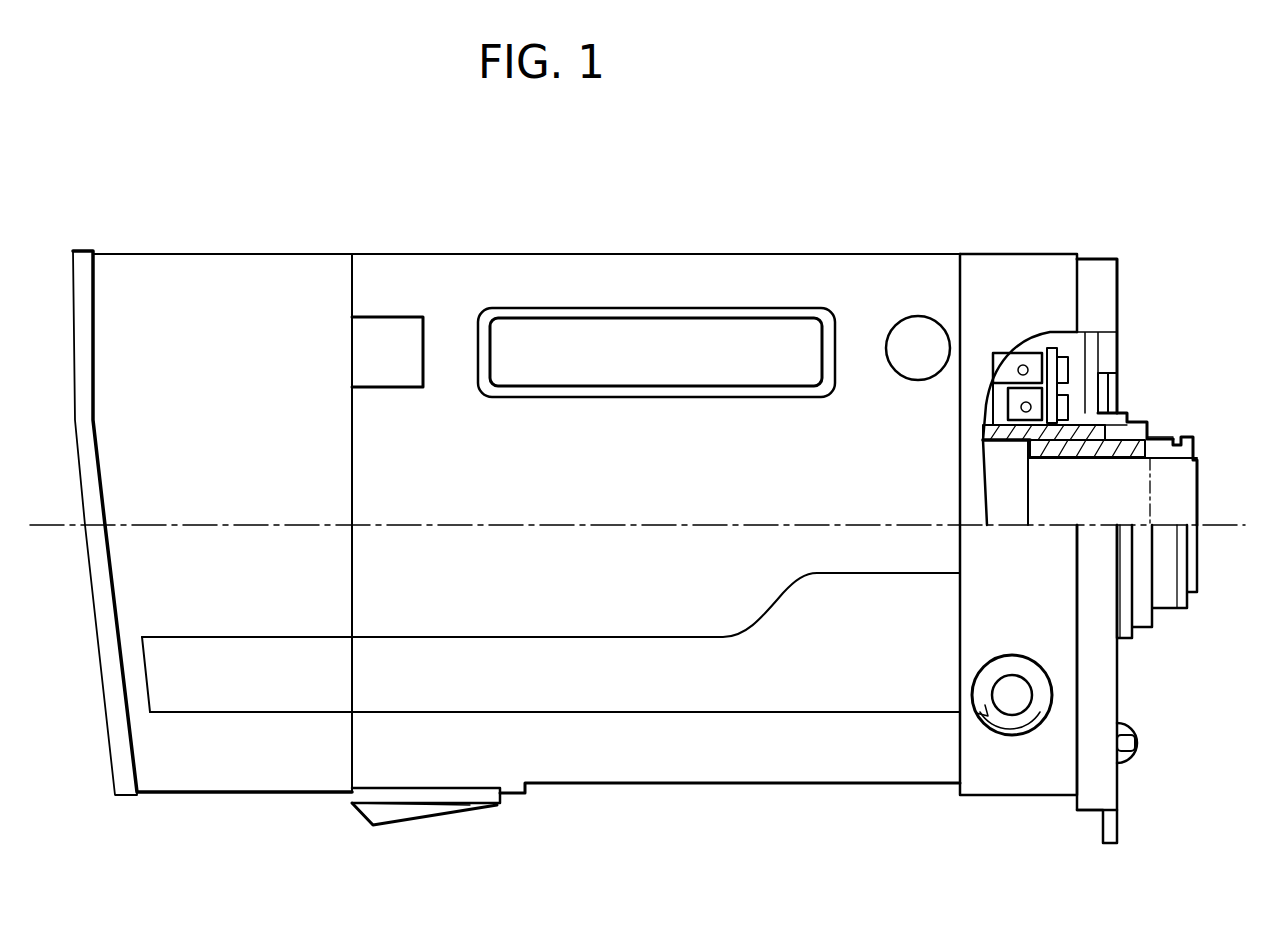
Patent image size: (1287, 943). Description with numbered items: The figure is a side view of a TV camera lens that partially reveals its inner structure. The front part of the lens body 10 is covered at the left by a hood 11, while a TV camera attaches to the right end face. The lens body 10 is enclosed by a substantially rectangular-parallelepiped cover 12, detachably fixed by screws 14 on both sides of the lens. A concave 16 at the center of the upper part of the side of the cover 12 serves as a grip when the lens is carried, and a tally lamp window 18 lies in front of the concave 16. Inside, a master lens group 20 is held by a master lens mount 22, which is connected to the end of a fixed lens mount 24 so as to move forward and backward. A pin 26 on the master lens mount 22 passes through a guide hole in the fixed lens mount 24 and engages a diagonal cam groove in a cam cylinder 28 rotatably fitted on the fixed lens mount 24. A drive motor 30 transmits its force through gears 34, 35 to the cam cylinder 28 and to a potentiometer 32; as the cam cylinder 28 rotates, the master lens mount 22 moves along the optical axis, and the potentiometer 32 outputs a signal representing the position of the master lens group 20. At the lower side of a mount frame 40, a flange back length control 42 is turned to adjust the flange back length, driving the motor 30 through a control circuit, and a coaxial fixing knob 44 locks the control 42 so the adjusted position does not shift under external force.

The lens body 10 is at (800, 172).
The hood 11 is at (190, 275).
The cover 12 is at (578, 268).
The screws 14 is at (912, 333).
The concave 16 is at (697, 338).
The tally lamp window 18 is at (398, 330).
The master lens group 20 is at (1138, 505).
The master lens mount 22 is at (1152, 430).
The fixed lens mount 24 is at (1000, 452).
The pin 26 is at (1112, 404).
The cam cylinder 28 is at (1135, 424).
The drive motor 30 is at (1023, 363).
The potentiometer 32 is at (1060, 402).
The gear 34 is at (1050, 368).
The gear 35 is at (1008, 408).
The mount frame 40 is at (1022, 275).
The flange back length control 42 is at (1015, 697).
The fixing knob 44 is at (1036, 690).